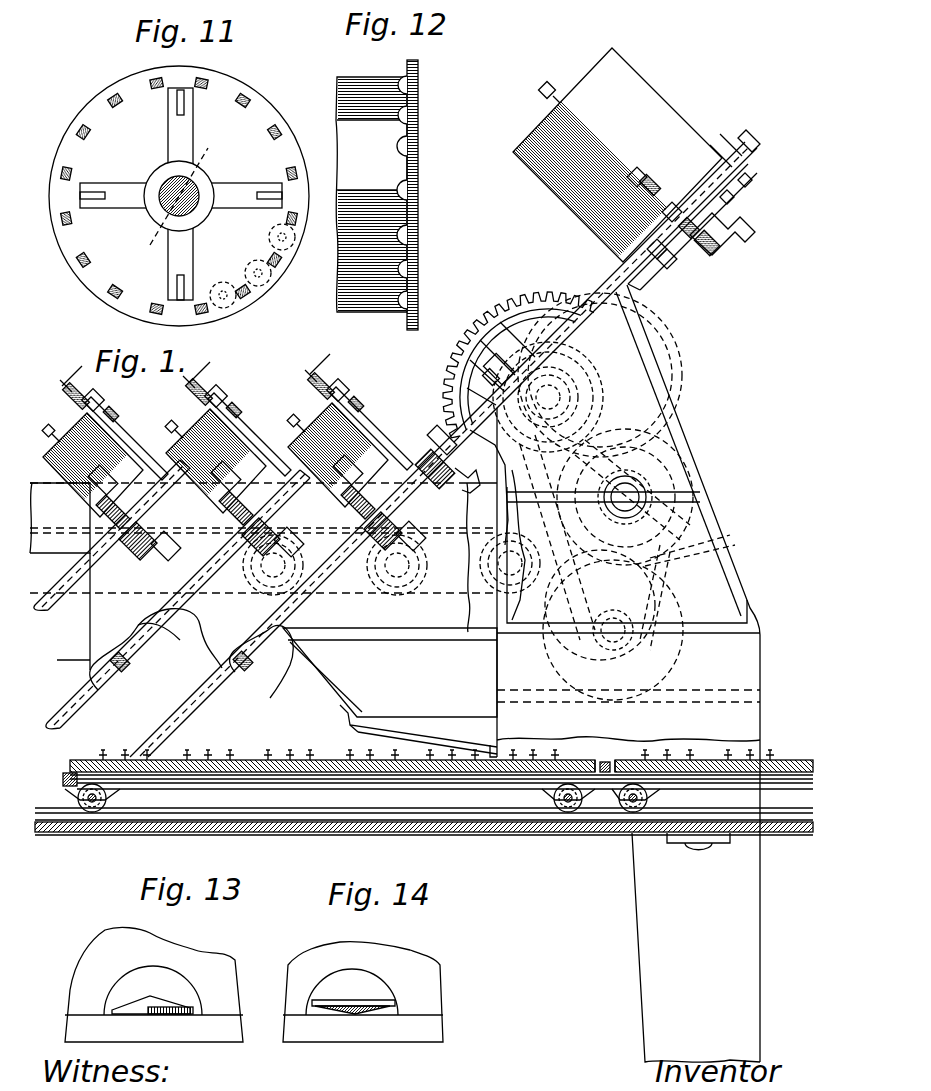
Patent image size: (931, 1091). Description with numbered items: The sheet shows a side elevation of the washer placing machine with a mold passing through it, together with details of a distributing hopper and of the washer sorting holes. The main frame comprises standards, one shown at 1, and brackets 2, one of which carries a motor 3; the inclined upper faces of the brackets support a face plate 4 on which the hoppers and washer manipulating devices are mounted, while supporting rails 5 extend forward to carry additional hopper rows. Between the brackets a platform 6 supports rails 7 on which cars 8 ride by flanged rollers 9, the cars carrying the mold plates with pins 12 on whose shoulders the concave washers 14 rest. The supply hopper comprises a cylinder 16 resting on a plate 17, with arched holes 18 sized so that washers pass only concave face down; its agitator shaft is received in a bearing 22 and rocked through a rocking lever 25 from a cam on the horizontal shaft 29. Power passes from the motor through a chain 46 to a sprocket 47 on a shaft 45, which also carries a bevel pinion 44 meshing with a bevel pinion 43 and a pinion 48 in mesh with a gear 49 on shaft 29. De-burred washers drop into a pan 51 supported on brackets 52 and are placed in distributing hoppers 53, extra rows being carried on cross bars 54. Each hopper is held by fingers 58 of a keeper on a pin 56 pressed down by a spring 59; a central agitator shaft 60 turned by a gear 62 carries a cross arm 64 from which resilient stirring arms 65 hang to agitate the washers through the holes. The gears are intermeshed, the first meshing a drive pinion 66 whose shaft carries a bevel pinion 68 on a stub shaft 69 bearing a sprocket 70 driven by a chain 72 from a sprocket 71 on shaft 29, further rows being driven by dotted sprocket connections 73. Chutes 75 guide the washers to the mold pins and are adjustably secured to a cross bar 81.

In FIG. 1, the standard 1 is at (760, 900).
In FIG. 1, the uprights or brackets 2 is at (738, 568).
In FIG. 1, the motor 3 is at (680, 650).
In FIG. 1, the table or face plate 4 is at (640, 320).
In FIG. 1, the supporting rails 5 is at (262, 690).
In FIG. 1, the table or platform 6 is at (495, 836).
In FIG. 1, the rails 7 is at (478, 795).
In FIG. 1, the cars 8 is at (290, 788).
In FIG. 1, the flanged rollers 9 is at (100, 808).
In FIG. 1, the pins or studs 12 is at (382, 758).
In FIG. 13, the washers 14 is at (165, 1012).
In FIG. 14, the washers 14 is at (370, 1012).
In FIG. 1, the cylinder 16 is at (664, 112).
In FIG. 1, the plate 17 is at (716, 148).
In FIG. 11, the arched or segment shaped holes 18 is at (245, 105).
In FIG. 12, the arched or segment shaped holes 18 is at (405, 150).
In FIG. 13, the arched or segment shaped holes 18 is at (160, 988).
In FIG. 14, the arched or segment shaped holes 18 is at (358, 988).
In FIG. 1, the bearing 22 is at (726, 250).
In FIG. 1, the rocking lever 25 is at (655, 298).
In FIG. 1, the horizontal shaft 29 is at (548, 385).
In FIG. 1, the bevel pinion 43 is at (645, 450).
In FIG. 1, the bevel pinion 44 is at (675, 536).
In FIG. 1, the shaft 45 is at (630, 493).
In FIG. 1, the chain 46 is at (660, 560).
In FIG. 1, the sprocket 47 is at (700, 480).
In FIG. 1, the pinion 48 is at (700, 512).
In FIG. 1, the gear 49 is at (506, 300).
In FIG. 1, the pan 51 is at (400, 642).
In FIG. 1, the brackets 52 is at (345, 720).
In FIG. 12, the distributing hoppers 53 is at (360, 310).
In FIG. 1, the distributing hoppers 53 is at (215, 460).
In FIG. 1, the cross bars 54 is at (122, 560).
In FIG. 1, the pin 56 is at (135, 428).
In FIG. 1, the fingers 58 is at (64, 400).
In FIG. 1, the spring 59 is at (208, 372).
In FIG. 11, the agitator shaft 60 is at (172, 203).
In FIG. 1, the gear 62 is at (148, 555).
In FIG. 11, the cross arm 64 is at (160, 190).
In FIG. 11, the stirring arms 65 is at (182, 296).
In FIG. 1, the drive pinion 66 is at (436, 450).
In FIG. 1, the bevel pinion 68 is at (540, 545).
In FIG. 1, the stub shaft 69 is at (525, 585).
In FIG. 1, the sprocket 70 is at (540, 550).
In FIG. 1, the sprocket 71 is at (625, 395).
In FIG. 1, the chain 72 is at (535, 438).
In FIG. 1, the sprocket connections 73 is at (335, 600).
In FIG. 1, the chutes 75 is at (70, 702).
In FIG. 1, the cross bar 81 is at (122, 670).